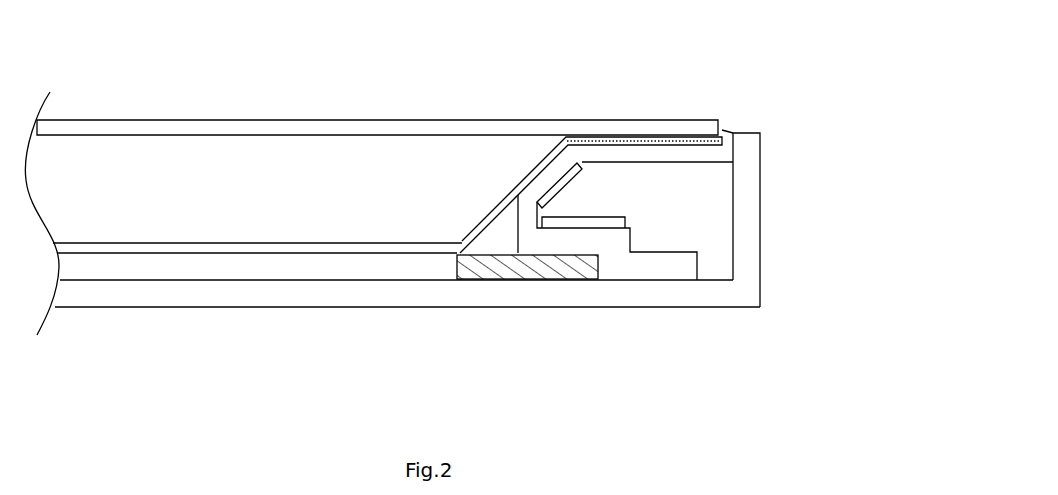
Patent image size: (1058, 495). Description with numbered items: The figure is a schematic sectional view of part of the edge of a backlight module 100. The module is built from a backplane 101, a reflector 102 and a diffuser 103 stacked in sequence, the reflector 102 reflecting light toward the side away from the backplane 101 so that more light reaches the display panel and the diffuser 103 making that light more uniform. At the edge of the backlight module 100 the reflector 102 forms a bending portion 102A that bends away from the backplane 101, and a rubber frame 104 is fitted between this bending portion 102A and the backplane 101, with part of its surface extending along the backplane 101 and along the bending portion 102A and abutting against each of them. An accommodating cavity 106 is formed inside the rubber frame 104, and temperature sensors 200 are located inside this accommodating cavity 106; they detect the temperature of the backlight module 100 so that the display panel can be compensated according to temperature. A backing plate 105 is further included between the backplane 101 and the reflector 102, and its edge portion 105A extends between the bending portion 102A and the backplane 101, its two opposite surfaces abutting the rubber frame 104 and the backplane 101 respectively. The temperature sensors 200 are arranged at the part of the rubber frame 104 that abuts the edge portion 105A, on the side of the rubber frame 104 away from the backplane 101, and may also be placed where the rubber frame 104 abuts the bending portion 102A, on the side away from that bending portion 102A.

The backlight module 100 is at (137, 44).
The backplane 101 is at (300, 308).
The reflector 102 is at (387, 224).
The bending portion 102A is at (526, 150).
The diffuser 103 is at (342, 120).
The rubber frame 104 is at (661, 266).
The backing plate 105 is at (396, 292).
The edge portion 105A is at (482, 267).
The accommodating cavity 106 is at (719, 215).
The temperature sensors 200 is at (577, 166).